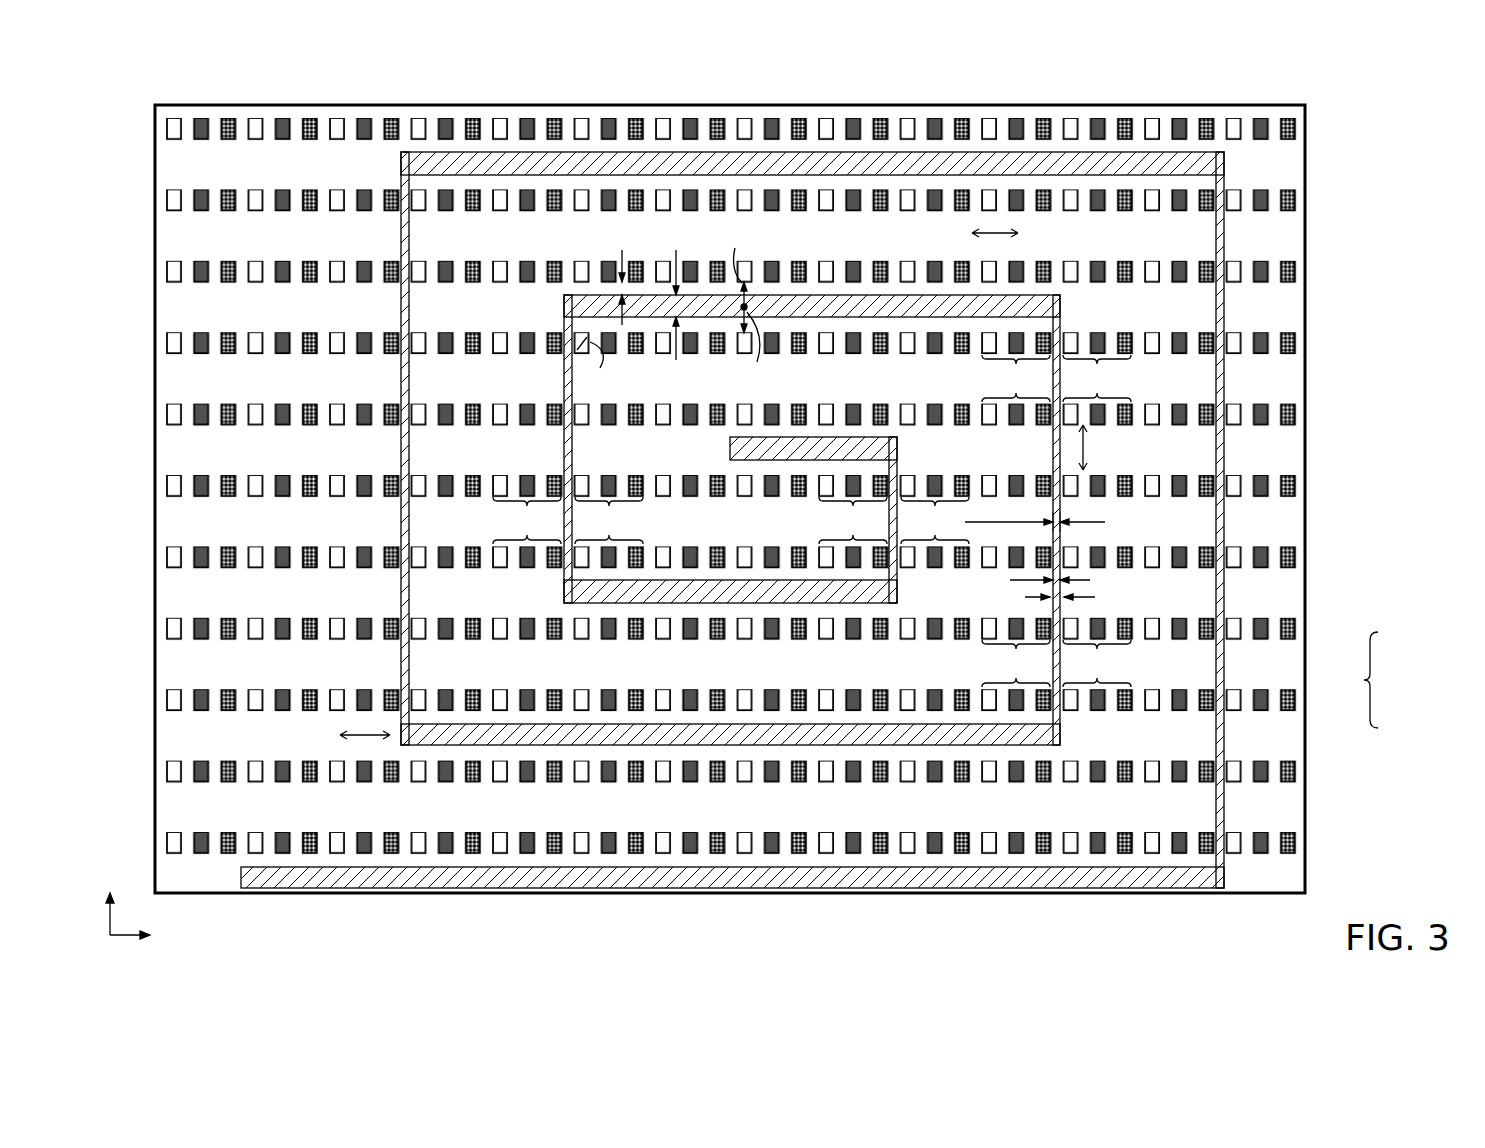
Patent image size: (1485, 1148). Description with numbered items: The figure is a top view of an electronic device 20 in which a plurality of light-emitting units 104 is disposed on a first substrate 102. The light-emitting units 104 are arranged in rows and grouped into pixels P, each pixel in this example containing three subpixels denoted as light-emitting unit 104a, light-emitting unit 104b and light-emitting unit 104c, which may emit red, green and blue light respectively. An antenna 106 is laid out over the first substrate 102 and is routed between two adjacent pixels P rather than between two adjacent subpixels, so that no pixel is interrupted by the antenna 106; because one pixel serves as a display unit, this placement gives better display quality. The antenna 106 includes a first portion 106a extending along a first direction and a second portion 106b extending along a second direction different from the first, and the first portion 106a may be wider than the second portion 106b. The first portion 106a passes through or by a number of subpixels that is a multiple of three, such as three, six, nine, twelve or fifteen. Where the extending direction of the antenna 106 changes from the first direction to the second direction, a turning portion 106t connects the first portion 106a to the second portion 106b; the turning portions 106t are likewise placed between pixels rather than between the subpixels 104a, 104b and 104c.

The electronic device 20 is at (133, 87).
The first substrate 102 is at (1285, 234).
The light-emitting units 104 is at (554, 853).
The light-emitting unit 104a is at (826, 853).
The light-emitting unit 104b is at (860, 853).
The light-emitting unit 104c is at (887, 853).
The antenna 106 is at (757, 165).
The first portion 106a is at (918, 295).
The second portion 106b is at (1053, 452).
The turning portion 106t is at (1220, 152).